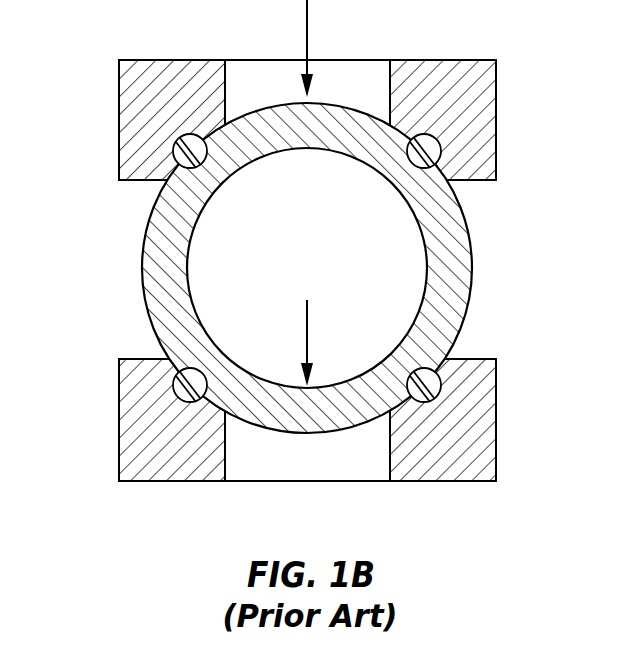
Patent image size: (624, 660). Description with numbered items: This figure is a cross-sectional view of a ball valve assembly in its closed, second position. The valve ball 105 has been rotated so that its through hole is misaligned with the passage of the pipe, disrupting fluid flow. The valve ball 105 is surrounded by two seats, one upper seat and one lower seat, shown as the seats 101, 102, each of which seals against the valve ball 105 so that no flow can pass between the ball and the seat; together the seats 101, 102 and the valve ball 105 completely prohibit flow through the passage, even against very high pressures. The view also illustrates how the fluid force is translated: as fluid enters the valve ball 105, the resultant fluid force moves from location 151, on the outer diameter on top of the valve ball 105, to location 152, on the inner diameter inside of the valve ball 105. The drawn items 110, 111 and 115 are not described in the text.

The seat 101 is at (497, 418).
The seat 102 is at (497, 119).
The valve ball 105 is at (118, 222).
The ring ferrule 110 is at (473, 268).
The central bore 111 is at (140, 271).
The ring bottom contact point 115 is at (307, 436).
The location 151 is at (303, 42).
The location 152 is at (303, 330).